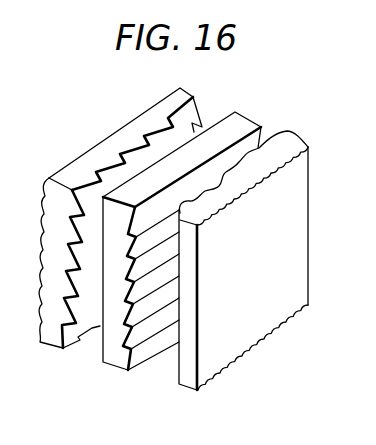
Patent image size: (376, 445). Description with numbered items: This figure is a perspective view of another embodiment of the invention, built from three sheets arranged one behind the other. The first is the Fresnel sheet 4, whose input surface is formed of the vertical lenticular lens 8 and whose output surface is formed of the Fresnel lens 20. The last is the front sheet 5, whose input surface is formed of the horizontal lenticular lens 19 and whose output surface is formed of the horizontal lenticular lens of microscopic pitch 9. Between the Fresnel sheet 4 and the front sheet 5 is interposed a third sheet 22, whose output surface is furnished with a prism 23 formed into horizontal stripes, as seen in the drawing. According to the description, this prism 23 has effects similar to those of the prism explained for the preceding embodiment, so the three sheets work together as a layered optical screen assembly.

The Fresnel sheet 4 is at (152, 115).
The front sheet 5 is at (185, 372).
The vertical lenticular lens 8 is at (42, 222).
The horizontal lenticular lens of microscopic pitch 9 is at (293, 252).
The horizontal lenticular lens 19 is at (262, 148).
The Fresnel lens 20 is at (80, 302).
The third sheet 22 is at (238, 122).
The prism 23 is at (143, 355).